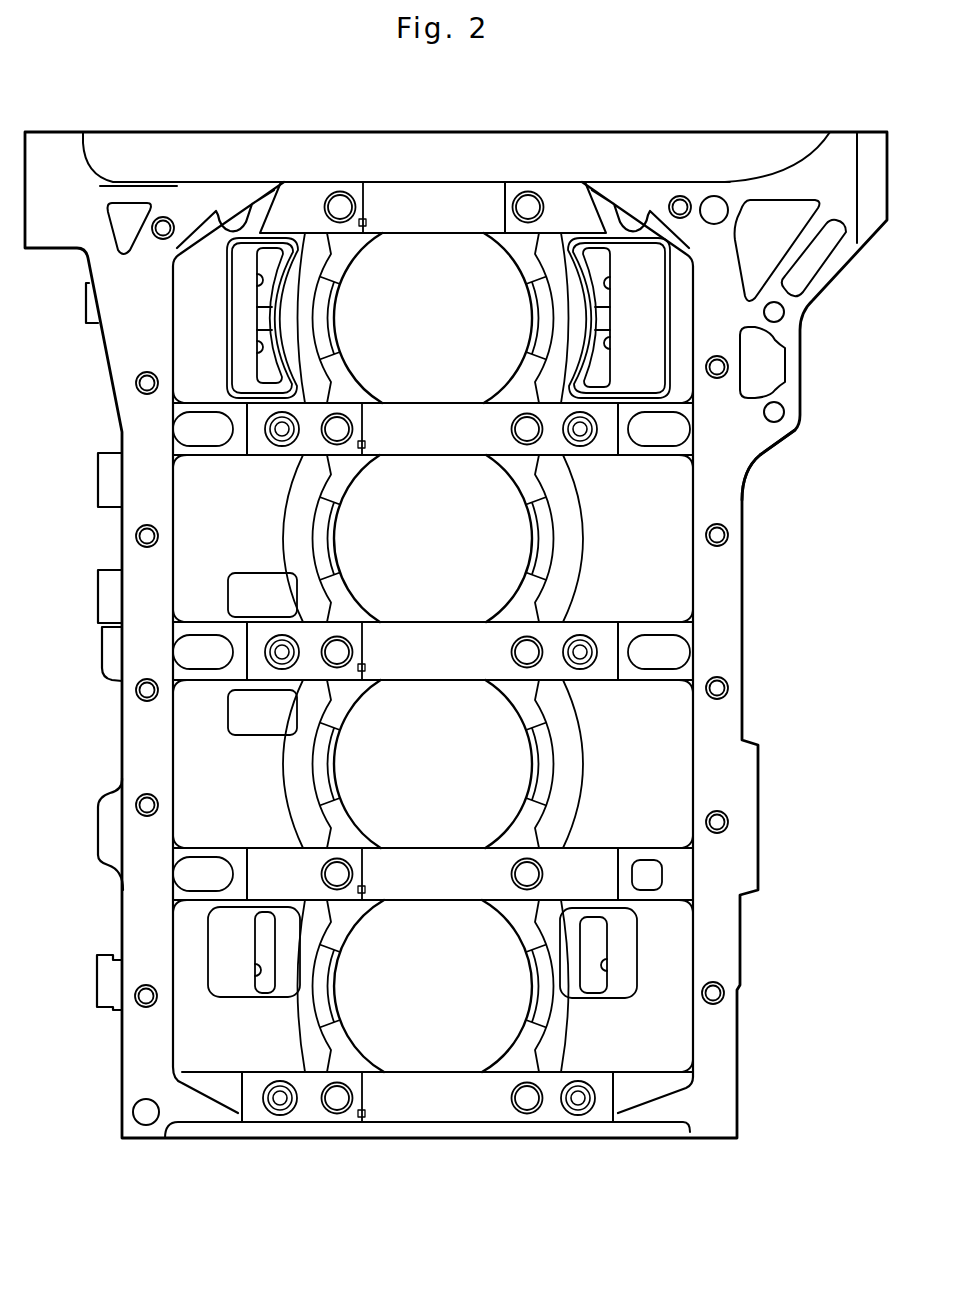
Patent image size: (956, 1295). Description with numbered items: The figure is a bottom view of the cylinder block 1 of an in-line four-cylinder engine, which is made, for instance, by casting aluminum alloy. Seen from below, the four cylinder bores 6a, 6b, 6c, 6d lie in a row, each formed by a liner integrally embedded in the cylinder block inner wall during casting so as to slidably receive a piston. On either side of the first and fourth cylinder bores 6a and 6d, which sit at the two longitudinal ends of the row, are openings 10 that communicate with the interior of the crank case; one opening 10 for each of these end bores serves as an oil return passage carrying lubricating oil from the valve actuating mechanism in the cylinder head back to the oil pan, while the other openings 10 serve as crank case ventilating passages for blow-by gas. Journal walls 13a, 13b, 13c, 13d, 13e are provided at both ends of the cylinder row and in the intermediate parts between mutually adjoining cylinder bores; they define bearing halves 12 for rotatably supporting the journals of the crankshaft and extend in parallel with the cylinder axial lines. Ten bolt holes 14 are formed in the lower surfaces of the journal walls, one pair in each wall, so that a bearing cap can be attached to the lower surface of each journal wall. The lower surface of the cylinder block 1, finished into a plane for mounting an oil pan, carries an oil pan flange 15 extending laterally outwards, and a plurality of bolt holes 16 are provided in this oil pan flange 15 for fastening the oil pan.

The cylinder block 1 is at (775, 103).
The cylinder bore 6a is at (340, 985).
The cylinder bore 6b is at (340, 760).
The cylinder bore 6c is at (340, 540).
The cylinder bore 6d is at (338, 330).
The opening 10 is at (250, 347).
The bearing half 12 is at (364, 200).
The journal wall 13a is at (494, 1082).
The journal wall 13b is at (492, 860).
The journal wall 13c is at (494, 634).
The journal wall 13d is at (494, 398).
The journal wall 13e is at (523, 182).
The bolt hole 14 is at (337, 196).
The oil pan flange 15 is at (740, 460).
The bolt hole 16 is at (158, 238).